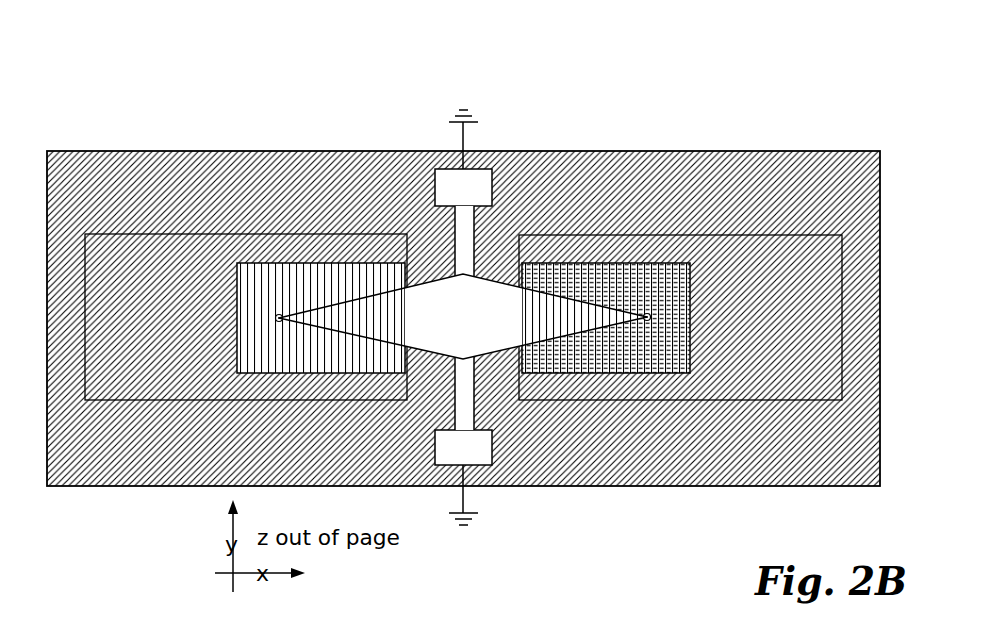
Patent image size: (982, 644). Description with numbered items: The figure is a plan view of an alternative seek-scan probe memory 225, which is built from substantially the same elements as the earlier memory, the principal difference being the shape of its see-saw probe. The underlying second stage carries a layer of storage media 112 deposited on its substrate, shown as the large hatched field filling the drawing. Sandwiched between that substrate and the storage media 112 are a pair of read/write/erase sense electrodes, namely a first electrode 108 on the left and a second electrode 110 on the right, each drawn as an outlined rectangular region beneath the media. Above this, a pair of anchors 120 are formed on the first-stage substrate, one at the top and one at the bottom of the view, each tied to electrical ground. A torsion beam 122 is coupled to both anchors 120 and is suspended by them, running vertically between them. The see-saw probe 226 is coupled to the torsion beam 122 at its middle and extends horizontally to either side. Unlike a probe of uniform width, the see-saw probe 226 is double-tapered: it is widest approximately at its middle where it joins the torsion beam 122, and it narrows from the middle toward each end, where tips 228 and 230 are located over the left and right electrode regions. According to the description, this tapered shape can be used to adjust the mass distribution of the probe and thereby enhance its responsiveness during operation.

The SSP memory 225 is at (443, 307).
The storage media 112 is at (77, 470).
The first electrode 108 is at (112, 245).
The second electrode 110 is at (728, 243).
The tip 228 is at (279, 314).
The tip 230 is at (647, 313).
The see-saw probe 226 is at (463, 316).
The torsion beam 122 is at (465, 252).
The anchors 120 is at (481, 183).